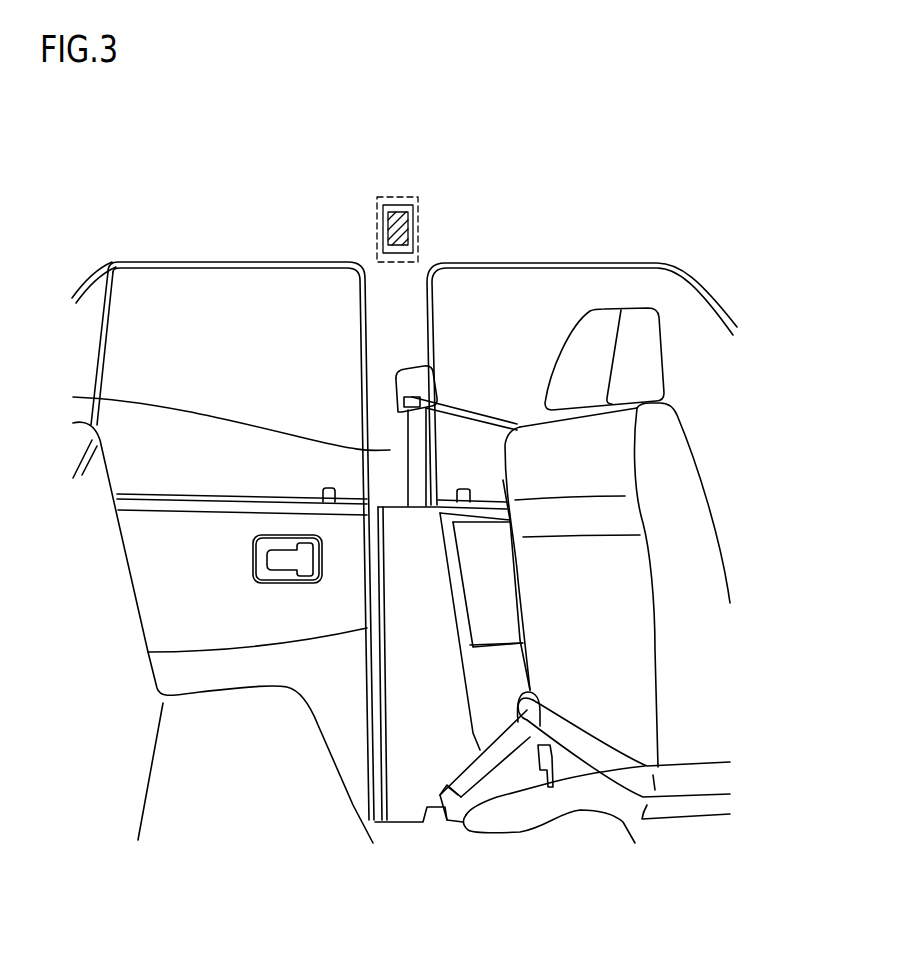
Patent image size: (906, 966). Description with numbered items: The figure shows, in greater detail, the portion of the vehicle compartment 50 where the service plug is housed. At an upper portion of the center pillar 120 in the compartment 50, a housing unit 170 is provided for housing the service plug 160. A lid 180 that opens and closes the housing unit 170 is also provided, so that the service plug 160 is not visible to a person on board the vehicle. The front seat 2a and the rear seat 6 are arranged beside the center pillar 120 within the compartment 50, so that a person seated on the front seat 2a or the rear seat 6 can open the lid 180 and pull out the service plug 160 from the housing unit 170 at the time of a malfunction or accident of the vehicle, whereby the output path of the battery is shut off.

The compartment 50 is at (790, 100).
The front seat 2a is at (690, 502).
The rear seat 6 is at (203, 777).
The center pillar 120 is at (211, 416).
The service plug 160 is at (398, 215).
The housing unit 170 is at (390, 198).
The lid 180 is at (405, 200).